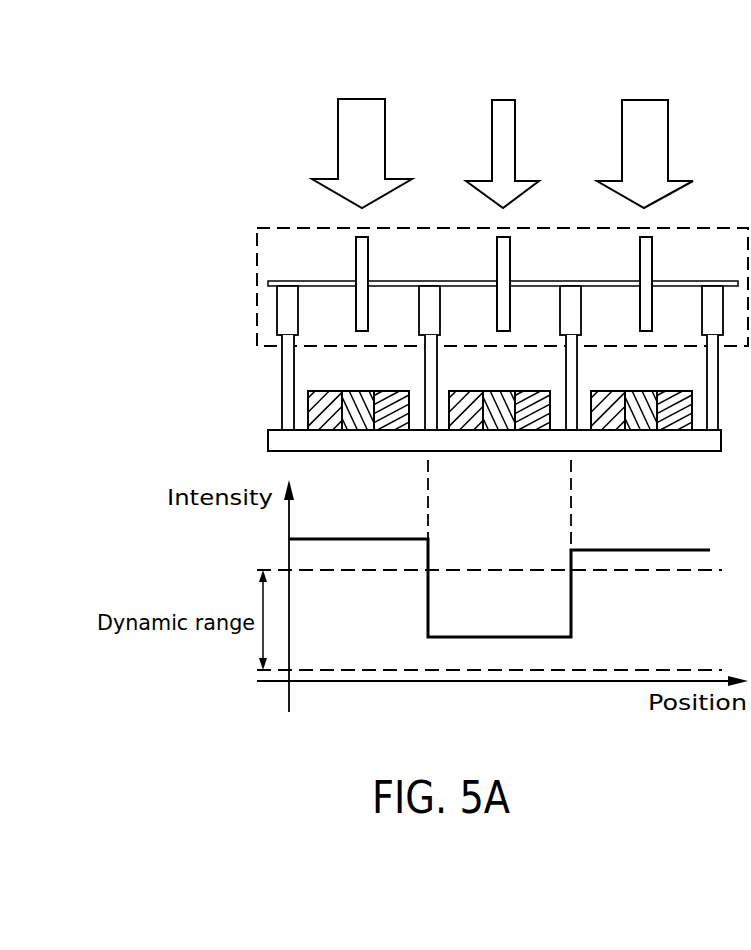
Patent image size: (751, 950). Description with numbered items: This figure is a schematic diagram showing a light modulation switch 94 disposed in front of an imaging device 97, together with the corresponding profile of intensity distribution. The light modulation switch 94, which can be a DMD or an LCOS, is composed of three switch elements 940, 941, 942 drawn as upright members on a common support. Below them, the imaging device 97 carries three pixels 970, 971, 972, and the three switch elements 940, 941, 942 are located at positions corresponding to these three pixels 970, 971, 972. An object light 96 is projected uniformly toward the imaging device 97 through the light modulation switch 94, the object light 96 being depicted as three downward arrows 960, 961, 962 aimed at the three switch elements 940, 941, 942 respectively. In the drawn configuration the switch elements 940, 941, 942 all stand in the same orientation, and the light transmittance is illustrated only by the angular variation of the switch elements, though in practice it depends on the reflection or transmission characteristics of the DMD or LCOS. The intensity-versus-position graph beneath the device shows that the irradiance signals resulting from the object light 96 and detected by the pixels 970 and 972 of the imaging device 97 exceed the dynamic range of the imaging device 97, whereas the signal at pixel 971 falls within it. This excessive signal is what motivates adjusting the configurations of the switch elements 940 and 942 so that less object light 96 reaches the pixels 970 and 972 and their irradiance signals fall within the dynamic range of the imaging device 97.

The object light 96 is at (317, 101).
The first light beam 960 is at (358, 103).
The second light beam 961 is at (505, 103).
The third light beam 962 is at (657, 103).
The light modulation switch 94 is at (252, 210).
The switch element 940 is at (356, 262).
The switch element 941 is at (497, 262).
The switch element 942 is at (640, 265).
The imaging device 97 is at (264, 419).
The pixel 970 is at (332, 390).
The pixel 971 is at (494, 391).
The pixel 972 is at (637, 391).